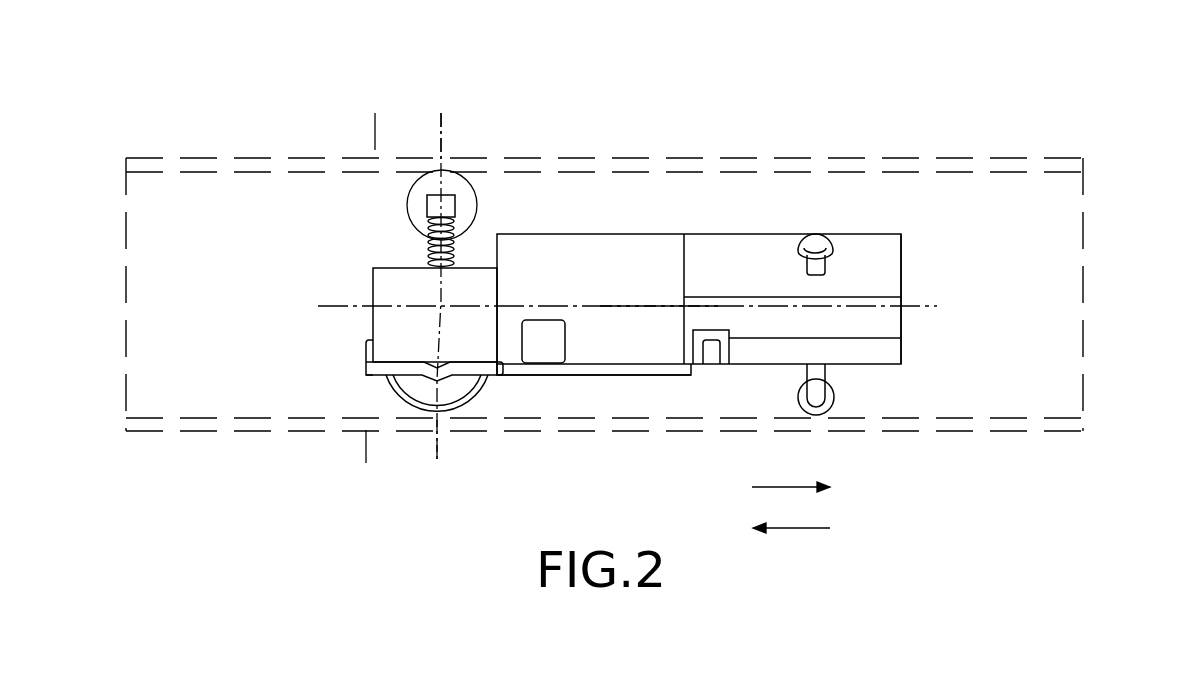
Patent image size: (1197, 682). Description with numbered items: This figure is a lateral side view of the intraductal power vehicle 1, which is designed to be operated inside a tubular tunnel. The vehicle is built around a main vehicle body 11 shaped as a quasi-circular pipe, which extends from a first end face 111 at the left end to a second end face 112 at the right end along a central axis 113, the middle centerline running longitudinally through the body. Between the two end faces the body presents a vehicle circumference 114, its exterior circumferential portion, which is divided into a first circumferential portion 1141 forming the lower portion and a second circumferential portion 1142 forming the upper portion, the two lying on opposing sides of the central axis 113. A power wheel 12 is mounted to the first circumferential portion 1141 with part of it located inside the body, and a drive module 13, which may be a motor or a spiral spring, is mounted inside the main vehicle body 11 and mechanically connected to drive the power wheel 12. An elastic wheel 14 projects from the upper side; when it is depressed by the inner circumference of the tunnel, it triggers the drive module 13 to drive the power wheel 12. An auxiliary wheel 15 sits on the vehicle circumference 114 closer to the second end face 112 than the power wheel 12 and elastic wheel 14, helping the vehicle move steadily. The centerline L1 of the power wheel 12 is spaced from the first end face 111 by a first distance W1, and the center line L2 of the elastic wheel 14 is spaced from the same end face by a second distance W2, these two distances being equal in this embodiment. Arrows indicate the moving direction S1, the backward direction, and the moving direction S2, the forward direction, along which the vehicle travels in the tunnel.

The intraductal power vehicle 1 is at (520, 92).
The main vehicle body 11 is at (655, 253).
The first end face 111 is at (372, 318).
The second end face 112 is at (901, 262).
The central axis 113 is at (653, 300).
The vehicle circumference 114 is at (597, 357).
The first circumferential portion 1141 is at (500, 377).
The second circumferential portion 1142 is at (395, 267).
The power wheel 12 is at (462, 380).
The drive module 13 is at (543, 332).
The elastic wheel 14 is at (478, 190).
The auxiliary wheel 15 is at (797, 397).
The first distance W1 is at (366, 452).
The second distance W2 is at (441, 120).
The centerline of the power wheel L1 is at (440, 440).
The center line of the elastic wheel L2 is at (442, 133).
The moving direction S1 is at (791, 476).
The moving direction S2 is at (791, 516).